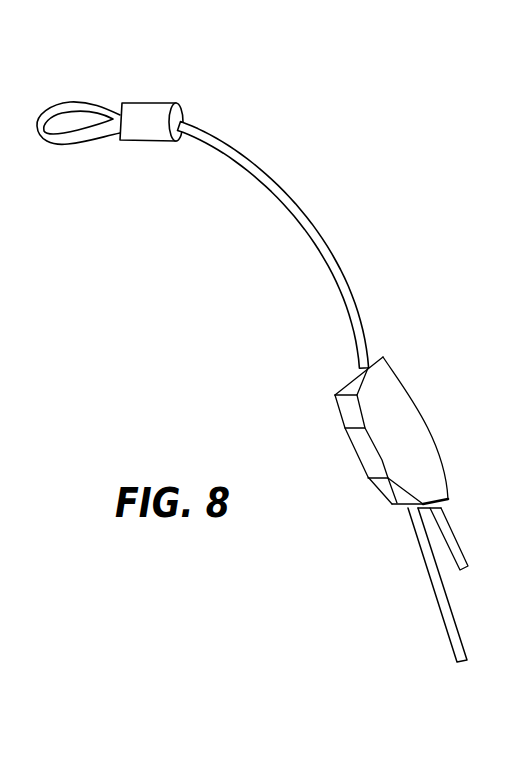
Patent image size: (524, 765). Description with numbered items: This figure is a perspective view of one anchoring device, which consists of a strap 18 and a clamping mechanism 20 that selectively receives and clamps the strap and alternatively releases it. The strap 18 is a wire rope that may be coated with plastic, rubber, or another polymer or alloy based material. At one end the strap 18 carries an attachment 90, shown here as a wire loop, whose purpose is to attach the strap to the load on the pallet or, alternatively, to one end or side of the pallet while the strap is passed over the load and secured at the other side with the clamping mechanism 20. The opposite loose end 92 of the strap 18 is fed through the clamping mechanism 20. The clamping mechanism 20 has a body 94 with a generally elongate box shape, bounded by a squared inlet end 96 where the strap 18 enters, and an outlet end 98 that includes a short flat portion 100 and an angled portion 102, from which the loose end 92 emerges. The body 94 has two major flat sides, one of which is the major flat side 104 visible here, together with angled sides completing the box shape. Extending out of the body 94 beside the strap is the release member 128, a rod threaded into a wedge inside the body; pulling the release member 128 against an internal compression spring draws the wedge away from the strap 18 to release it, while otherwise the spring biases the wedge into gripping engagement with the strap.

The strap 18 is at (267, 167).
The clamping mechanism 20 is at (378, 444).
The attachment 90 is at (77, 102).
The loose end 92 is at (457, 663).
The body 94 is at (438, 452).
The inlet end 96 is at (352, 383).
The outlet end 98 is at (447, 502).
The short flat portion 100 is at (444, 508).
The angled portion 102 is at (397, 510).
The major flat side 104 is at (380, 397).
The release member 128 is at (460, 572).